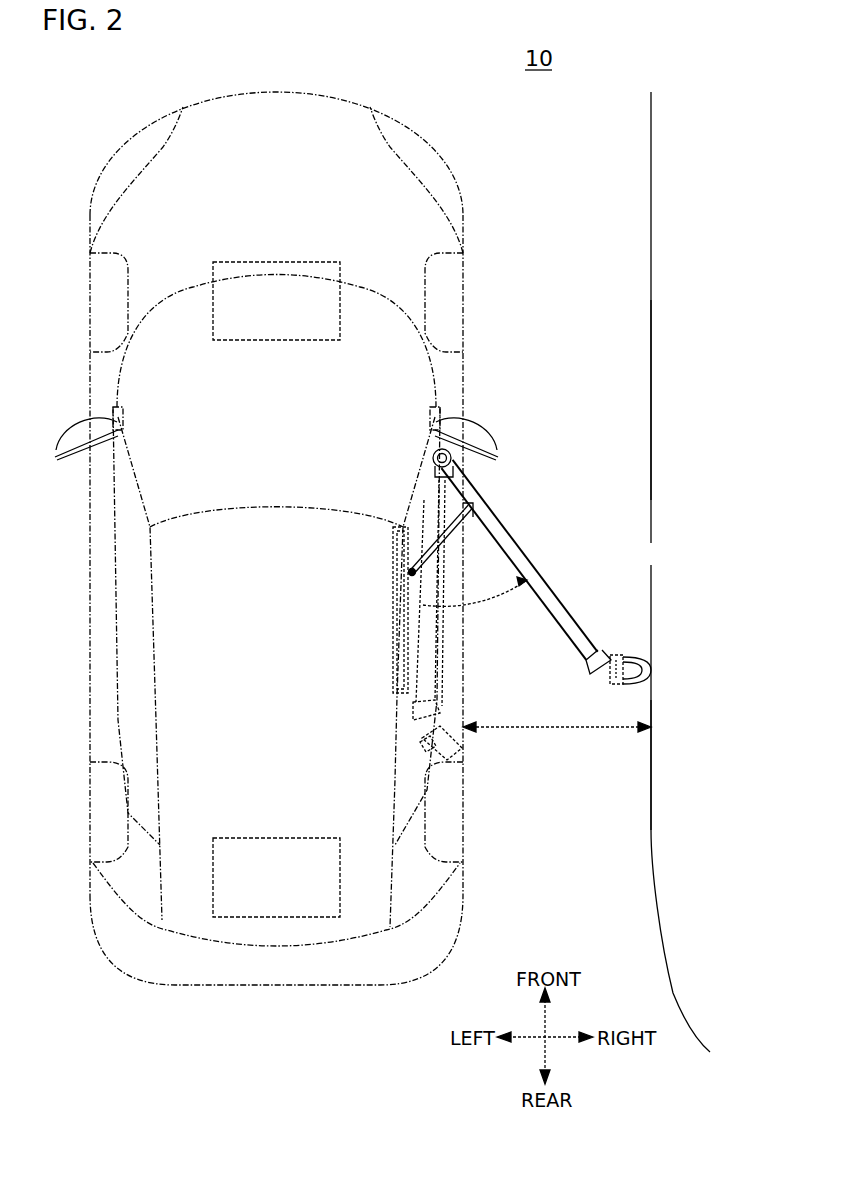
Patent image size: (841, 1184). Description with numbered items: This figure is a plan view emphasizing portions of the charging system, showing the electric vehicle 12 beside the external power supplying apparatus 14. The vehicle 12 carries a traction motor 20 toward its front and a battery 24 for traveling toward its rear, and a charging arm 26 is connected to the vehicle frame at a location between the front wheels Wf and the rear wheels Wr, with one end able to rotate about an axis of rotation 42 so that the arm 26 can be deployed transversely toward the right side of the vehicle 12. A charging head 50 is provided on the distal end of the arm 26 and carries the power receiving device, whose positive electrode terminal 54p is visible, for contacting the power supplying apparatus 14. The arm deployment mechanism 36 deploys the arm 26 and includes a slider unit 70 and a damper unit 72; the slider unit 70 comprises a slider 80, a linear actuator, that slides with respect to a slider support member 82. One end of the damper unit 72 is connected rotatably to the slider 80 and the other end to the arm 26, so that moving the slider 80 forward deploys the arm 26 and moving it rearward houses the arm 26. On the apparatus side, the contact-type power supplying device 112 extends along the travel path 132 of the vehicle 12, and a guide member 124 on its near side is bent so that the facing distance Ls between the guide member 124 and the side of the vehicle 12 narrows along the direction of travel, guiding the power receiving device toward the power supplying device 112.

The electric vehicle 12 is at (232, 118).
The external power supplying apparatus 14 is at (630, 564).
The traction motor 20 is at (255, 342).
The battery for traveling 24 is at (250, 838).
The charging arm 26 is at (505, 536).
The arm deployment mechanism 36 is at (502, 601).
The axis of rotation 42 is at (433, 457).
The charging head 50 is at (618, 656).
The positive electrode terminal 54p is at (645, 665).
The slider unit 70 is at (356, 610).
The damper unit 72 is at (455, 533).
The slider 80 is at (409, 585).
The slider support member 82 is at (398, 631).
The contact-type power supplying device 112 is at (648, 181).
The guide member 124 is at (670, 970).
The travel path 132 is at (617, 832).
The front wheels Wf is at (122, 262).
The rear wheels Wr is at (130, 813).
The facing distance Ls is at (557, 717).